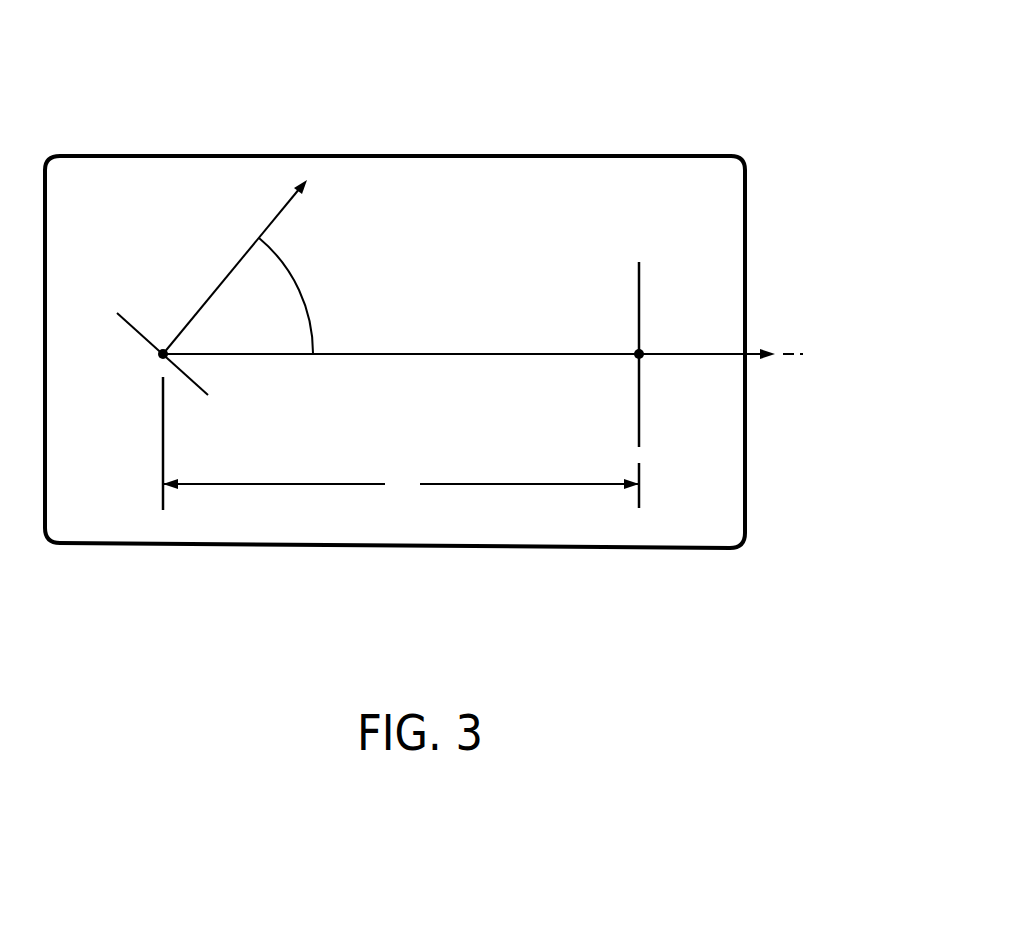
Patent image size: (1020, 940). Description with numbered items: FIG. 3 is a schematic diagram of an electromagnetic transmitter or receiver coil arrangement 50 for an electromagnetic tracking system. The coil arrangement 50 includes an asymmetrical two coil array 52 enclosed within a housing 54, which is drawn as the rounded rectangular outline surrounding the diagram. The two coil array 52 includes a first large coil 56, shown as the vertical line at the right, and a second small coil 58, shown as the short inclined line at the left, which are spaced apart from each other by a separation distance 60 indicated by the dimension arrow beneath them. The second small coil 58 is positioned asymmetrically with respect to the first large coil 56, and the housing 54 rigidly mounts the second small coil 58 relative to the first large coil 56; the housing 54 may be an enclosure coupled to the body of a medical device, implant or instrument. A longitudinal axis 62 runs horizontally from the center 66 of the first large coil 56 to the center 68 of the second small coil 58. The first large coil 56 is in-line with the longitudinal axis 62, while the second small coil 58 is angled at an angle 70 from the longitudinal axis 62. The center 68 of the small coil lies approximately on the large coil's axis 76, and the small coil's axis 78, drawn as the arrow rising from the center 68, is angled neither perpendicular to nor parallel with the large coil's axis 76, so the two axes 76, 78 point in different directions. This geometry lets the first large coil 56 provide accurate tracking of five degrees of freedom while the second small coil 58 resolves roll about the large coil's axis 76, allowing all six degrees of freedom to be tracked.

The electromagnetic transmitter or receiver coil arrangement 50 is at (566, 86).
The asymmetrical two coil array 52 is at (415, 180).
The housing 54 is at (272, 157).
The first large coil 56 is at (640, 282).
The second small coil 58 is at (130, 323).
The separation distance 60 is at (401, 443).
The longitudinal axis 62 is at (888, 333).
The center of the first large coil 66 is at (643, 360).
The center of the second small coil 68 is at (152, 360).
The angle 70 is at (300, 283).
The large coil's axis 76 is at (718, 351).
The small coil's axis 78 is at (275, 220).